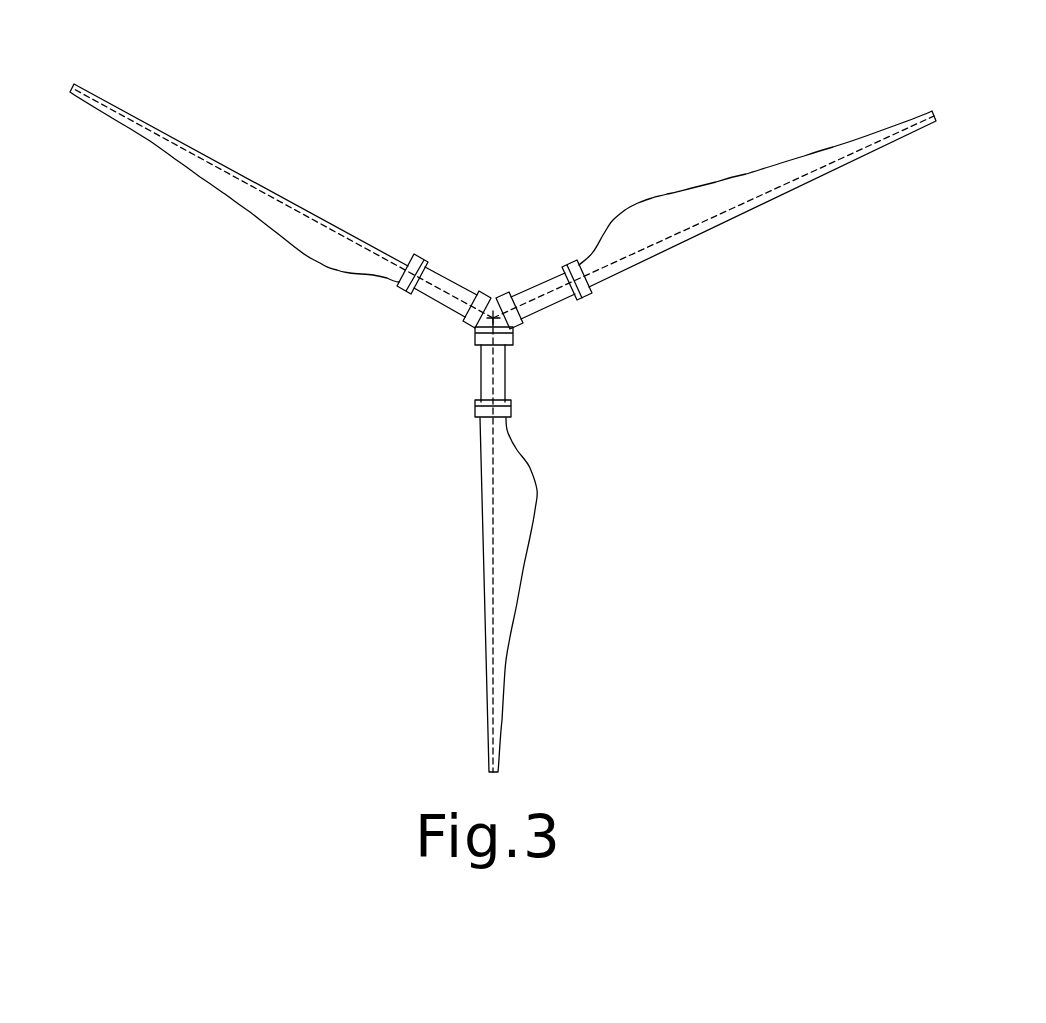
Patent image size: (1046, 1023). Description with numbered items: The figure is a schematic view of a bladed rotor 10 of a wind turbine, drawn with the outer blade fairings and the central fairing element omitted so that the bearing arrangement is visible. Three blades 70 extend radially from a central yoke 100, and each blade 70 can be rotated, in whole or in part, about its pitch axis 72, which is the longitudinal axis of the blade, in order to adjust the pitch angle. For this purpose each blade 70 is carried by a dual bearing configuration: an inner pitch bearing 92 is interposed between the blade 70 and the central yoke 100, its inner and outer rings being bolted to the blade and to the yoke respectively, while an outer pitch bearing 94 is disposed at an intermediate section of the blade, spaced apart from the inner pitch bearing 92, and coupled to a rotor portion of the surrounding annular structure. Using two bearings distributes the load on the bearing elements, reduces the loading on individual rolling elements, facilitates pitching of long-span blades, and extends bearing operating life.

The bladed rotor 10 is at (328, 502).
The blade 70 is at (157, 130).
The pitch axis 72 is at (265, 191).
The outer pitch bearing 94 is at (406, 262).
The inner pitch bearing 92 is at (472, 327).
The central yoke 100 is at (477, 333).